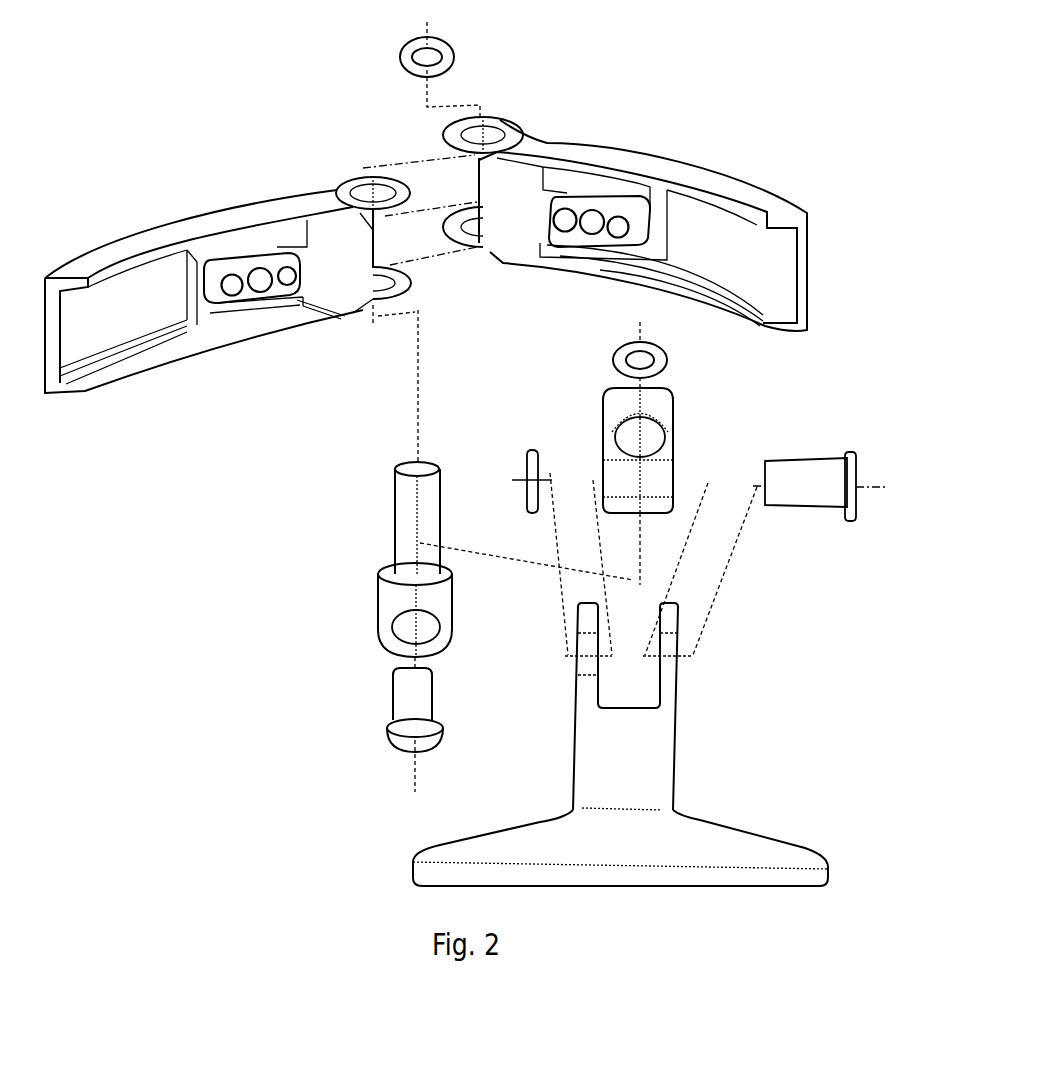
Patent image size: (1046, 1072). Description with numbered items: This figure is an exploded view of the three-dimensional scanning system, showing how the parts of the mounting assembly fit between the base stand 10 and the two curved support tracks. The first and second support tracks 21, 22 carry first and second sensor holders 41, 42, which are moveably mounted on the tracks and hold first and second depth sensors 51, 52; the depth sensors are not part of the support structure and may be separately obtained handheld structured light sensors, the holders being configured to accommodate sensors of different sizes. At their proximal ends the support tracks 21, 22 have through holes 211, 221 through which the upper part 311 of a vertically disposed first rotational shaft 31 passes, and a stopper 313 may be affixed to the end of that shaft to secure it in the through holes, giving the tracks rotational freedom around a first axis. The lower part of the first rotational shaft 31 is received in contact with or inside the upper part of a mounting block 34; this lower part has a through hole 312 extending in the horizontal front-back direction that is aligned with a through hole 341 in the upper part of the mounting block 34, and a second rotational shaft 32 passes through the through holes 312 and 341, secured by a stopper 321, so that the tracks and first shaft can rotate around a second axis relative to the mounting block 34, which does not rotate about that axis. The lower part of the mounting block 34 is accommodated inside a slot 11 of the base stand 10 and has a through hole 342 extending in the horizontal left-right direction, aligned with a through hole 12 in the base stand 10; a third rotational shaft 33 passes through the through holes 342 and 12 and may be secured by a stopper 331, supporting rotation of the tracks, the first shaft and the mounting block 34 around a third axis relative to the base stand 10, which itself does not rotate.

The base stand 10 is at (620, 744).
The slot 11 is at (597, 690).
The through hole 12 is at (677, 663).
The first support track 21 is at (130, 247).
The second support track 22 is at (717, 187).
The through hole 211 is at (360, 177).
The through hole 221 is at (490, 120).
The first rotational shaft 31 is at (366, 559).
The upper part of the first rotational shaft 311 is at (413, 498).
The through hole 312 is at (393, 630).
The stopper 313 is at (403, 60).
The second rotational shaft 32 is at (408, 695).
The stopper 321 is at (620, 360).
The third rotational shaft 33 is at (815, 473).
The stopper 331 is at (525, 457).
The mounting block 34 is at (642, 442).
The through hole 341 is at (623, 442).
The through hole 342 is at (660, 477).
The first sensor holder 41 is at (277, 243).
The second sensor holder 42 is at (627, 203).
The first depth sensor 51 is at (243, 278).
The second depth sensor 52 is at (573, 212).